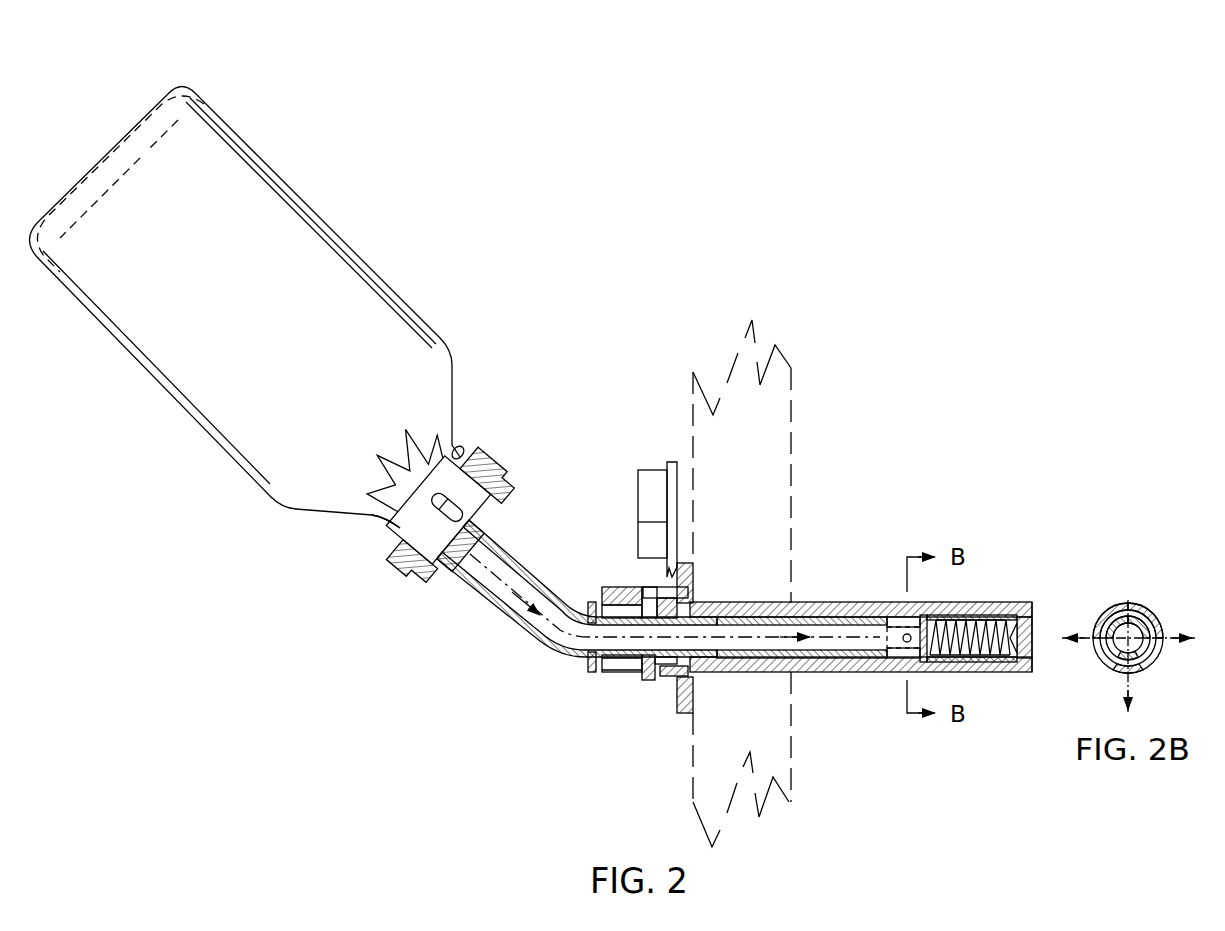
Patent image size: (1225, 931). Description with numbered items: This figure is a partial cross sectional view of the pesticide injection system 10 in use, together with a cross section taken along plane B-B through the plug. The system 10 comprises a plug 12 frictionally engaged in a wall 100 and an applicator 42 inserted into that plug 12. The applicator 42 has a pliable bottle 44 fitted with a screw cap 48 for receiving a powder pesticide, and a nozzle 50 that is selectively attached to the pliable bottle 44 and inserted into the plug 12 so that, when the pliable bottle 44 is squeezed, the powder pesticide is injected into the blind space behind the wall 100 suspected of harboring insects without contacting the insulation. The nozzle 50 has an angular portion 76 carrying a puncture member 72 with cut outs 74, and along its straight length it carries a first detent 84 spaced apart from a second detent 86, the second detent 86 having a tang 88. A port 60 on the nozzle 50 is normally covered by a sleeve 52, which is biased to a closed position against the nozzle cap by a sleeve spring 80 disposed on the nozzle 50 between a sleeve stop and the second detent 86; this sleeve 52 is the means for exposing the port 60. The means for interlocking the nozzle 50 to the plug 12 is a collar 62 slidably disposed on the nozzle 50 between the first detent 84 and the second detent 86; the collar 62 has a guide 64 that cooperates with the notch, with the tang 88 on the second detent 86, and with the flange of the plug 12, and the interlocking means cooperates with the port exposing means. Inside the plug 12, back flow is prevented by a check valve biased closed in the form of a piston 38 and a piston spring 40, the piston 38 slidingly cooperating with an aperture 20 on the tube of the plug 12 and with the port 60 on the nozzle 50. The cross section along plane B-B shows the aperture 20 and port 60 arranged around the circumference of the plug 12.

In FIG. 2, the pesticide injection system 10 is at (623, 227).
In FIG. 2, the plug 12 is at (817, 600).
In FIG. 2, the aperture 20 is at (900, 674).
In FIG. 2B, the aperture 20 is at (1096, 630).
In FIG. 2, the piston 38 is at (975, 620).
In FIG. 2, the piston spring 40 is at (1005, 657).
In FIG. 2, the applicator 42 is at (538, 516).
In FIG. 2, the pliable bottle 44 is at (333, 347).
In FIG. 2, the screw cap 48 is at (500, 465).
In FIG. 2, the nozzle 50 is at (651, 611).
In FIG. 2, the sleeve 52 is at (853, 612).
In FIG. 2, the port 60 is at (903, 642).
In FIG. 2B, the port 60 is at (1106, 645).
In FIG. 2, the collar 62 is at (607, 586).
In FIG. 2, the guide 64 is at (652, 590).
In FIG. 2, the puncture member 72 is at (450, 478).
In FIG. 2, the cut outs 74 is at (395, 525).
In FIG. 2, the angular portion 76 is at (476, 586).
In FIG. 2, the sleeve spring 80 is at (660, 676).
In FIG. 2, the first detent 84 is at (597, 606).
In FIG. 2, the second detent 86 is at (640, 682).
In FIG. 2, the tang 88 is at (672, 677).
In FIG. 2, the wall 100 is at (723, 728).